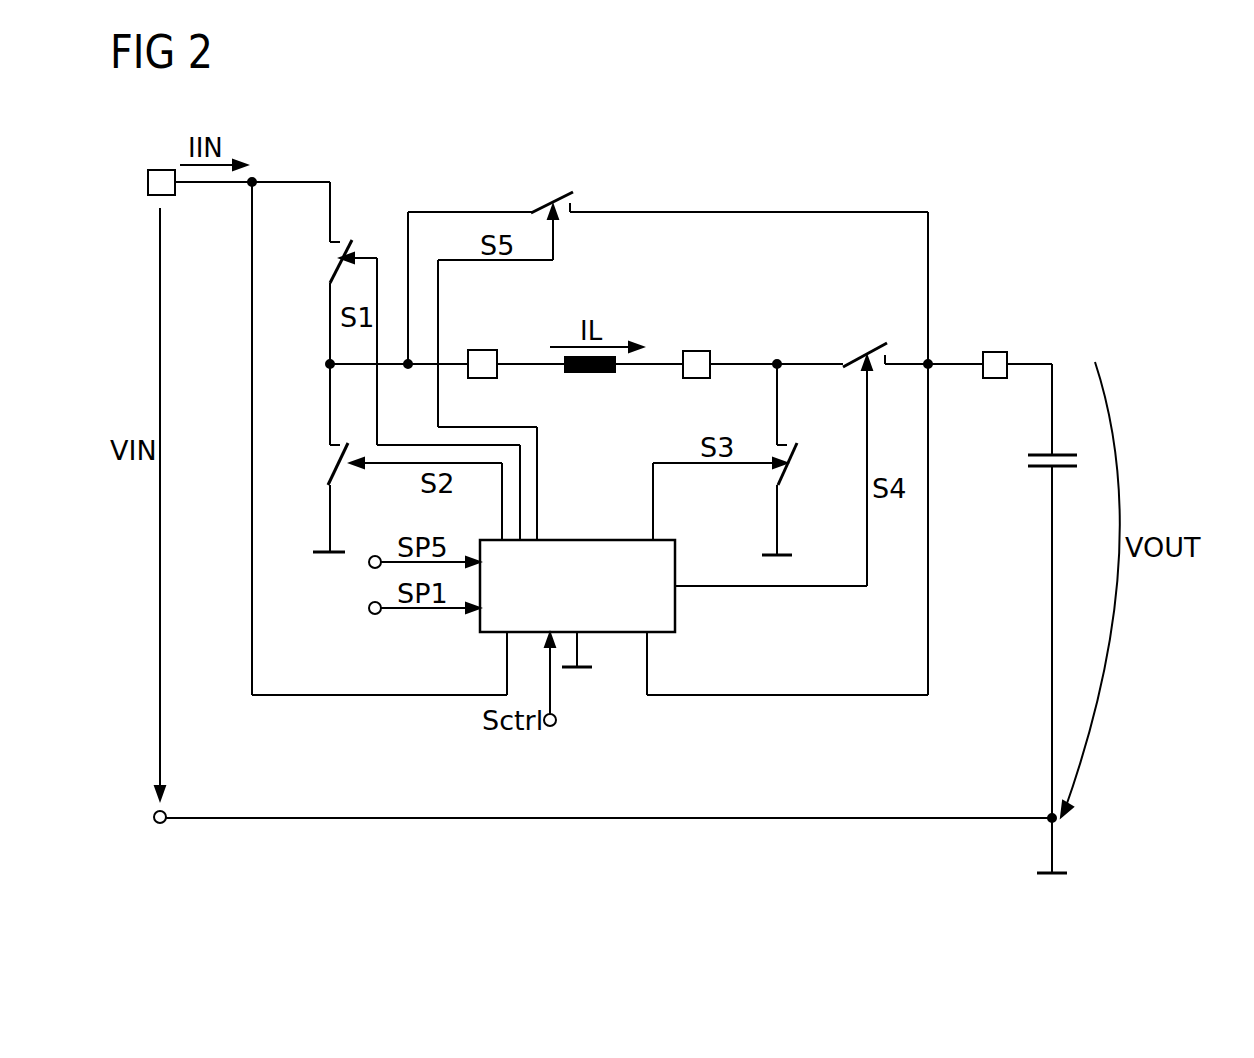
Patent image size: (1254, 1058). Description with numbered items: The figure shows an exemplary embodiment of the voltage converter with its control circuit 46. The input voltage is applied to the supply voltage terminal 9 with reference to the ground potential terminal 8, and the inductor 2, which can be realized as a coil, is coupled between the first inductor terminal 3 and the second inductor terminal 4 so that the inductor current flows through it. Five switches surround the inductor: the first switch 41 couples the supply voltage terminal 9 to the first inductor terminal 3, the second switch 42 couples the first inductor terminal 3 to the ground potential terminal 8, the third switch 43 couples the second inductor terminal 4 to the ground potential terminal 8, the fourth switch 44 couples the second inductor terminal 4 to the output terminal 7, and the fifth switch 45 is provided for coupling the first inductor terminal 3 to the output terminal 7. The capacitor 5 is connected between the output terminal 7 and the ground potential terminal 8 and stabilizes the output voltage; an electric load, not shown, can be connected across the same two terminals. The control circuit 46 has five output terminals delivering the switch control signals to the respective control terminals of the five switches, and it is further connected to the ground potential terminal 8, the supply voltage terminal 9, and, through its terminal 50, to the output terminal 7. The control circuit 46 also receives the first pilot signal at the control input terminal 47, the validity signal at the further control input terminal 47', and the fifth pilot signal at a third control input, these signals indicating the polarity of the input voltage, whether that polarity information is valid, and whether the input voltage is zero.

The inductor 2 is at (588, 373).
The first inductor terminal 3 is at (487, 349).
The second inductor terminal 4 is at (697, 350).
The capacitor 5 is at (1065, 452).
The output terminal 7 is at (995, 379).
The ground potential terminal 8 is at (320, 548).
The supply voltage terminal 9 is at (160, 168).
The first switch 41 is at (333, 268).
The second switch 42 is at (330, 470).
The third switch 43 is at (800, 460).
The fourth switch 44 is at (855, 355).
The fifth switch 45 is at (543, 205).
The control circuit 46 is at (578, 538).
The control input terminal 47 is at (424, 645).
The control input terminal 47' is at (561, 714).
The terminal of the control circuit 50 is at (650, 634).